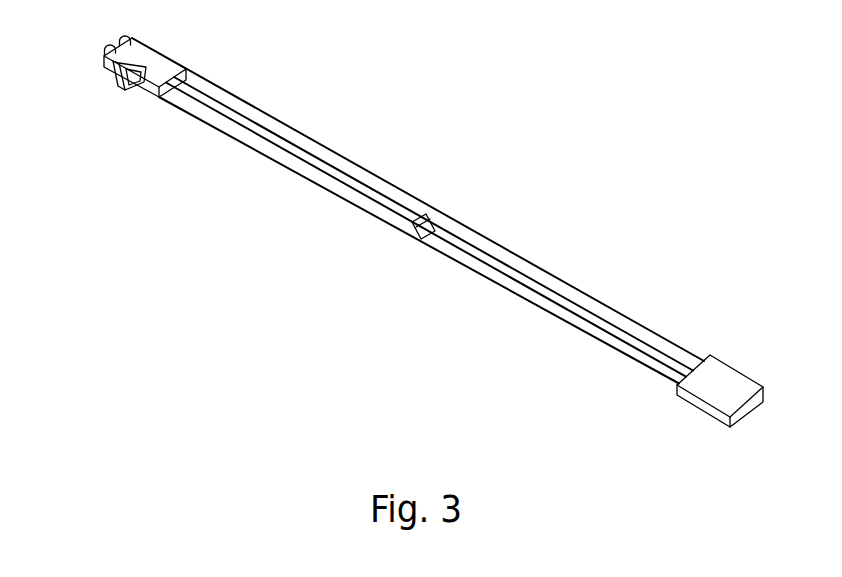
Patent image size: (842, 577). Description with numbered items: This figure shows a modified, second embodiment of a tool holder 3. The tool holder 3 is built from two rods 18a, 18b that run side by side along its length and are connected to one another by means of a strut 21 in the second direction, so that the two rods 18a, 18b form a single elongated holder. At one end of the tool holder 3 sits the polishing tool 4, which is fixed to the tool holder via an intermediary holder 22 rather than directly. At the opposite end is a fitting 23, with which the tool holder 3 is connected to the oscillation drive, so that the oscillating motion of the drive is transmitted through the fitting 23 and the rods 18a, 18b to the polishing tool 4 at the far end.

The tool holder 3 is at (468, 152).
The polishing tool 4 is at (122, 78).
The rod 18a is at (320, 185).
The rod 18b is at (363, 176).
The strut 21 is at (431, 236).
The intermediary holder 22 is at (150, 73).
The fitting 23 is at (713, 403).